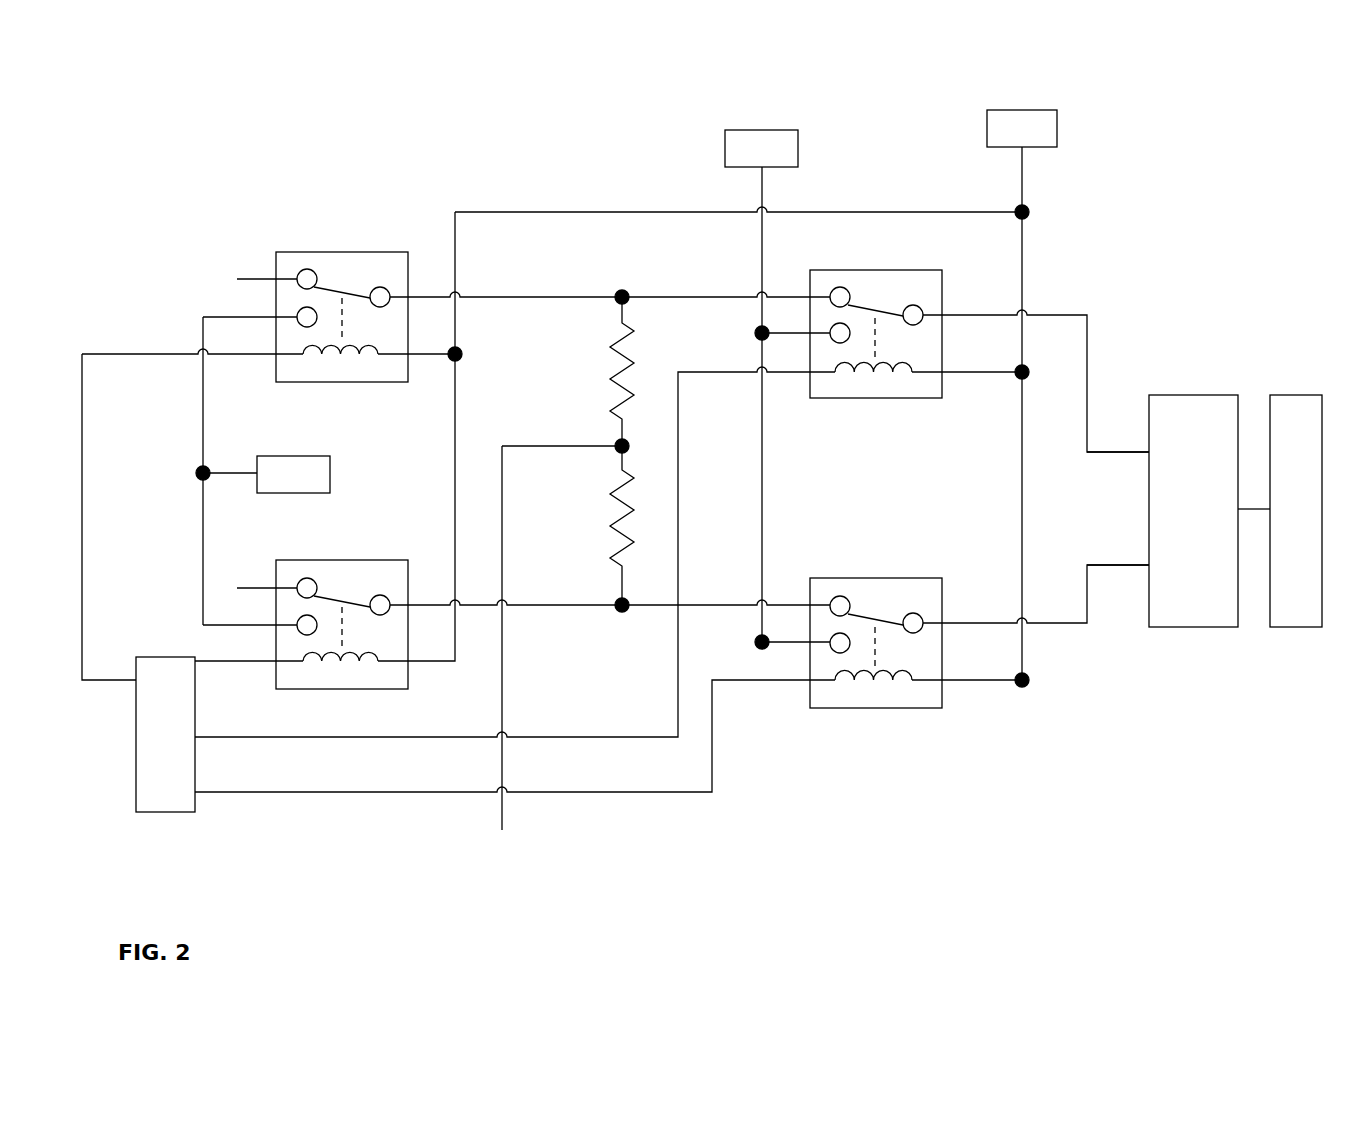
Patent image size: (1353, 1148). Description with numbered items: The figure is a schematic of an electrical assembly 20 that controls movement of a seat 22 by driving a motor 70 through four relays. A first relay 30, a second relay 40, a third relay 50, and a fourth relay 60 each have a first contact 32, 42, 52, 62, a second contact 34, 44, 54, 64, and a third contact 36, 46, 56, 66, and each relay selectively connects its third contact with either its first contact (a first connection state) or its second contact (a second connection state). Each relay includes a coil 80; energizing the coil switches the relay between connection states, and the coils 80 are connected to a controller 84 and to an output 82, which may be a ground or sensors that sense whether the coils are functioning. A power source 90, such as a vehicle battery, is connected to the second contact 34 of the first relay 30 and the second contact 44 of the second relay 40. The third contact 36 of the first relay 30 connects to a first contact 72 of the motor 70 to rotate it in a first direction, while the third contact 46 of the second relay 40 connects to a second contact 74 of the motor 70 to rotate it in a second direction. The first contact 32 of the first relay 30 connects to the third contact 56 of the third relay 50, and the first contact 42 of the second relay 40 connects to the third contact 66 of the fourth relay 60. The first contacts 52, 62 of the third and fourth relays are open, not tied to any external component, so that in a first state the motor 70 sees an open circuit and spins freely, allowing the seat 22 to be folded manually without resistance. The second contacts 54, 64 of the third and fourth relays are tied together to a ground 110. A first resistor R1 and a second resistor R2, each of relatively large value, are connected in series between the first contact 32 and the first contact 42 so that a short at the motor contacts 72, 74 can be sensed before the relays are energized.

The electrical assembly 20 is at (193, 92).
The seat 22 is at (1300, 395).
The first relay 30 is at (870, 268).
The first contact of the first relay 32 is at (840, 287).
The second contact of the first relay 34 is at (837, 343).
The third contact of the first relay 36 is at (912, 305).
The second relay 40 is at (870, 576).
The first contact of the second relay 42 is at (840, 596).
The second contact of the second relay 44 is at (837, 653).
The third contact of the second relay 46 is at (912, 613).
The third relay 50 is at (338, 248).
The first contact of the third relay 52 is at (306, 269).
The second contact of the third relay 54 is at (304, 328).
The third contact of the third relay 56 is at (378, 287).
The fourth relay 60 is at (338, 558).
The first contact of the fourth relay 62 is at (307, 578).
The second contact of the fourth relay 64 is at (304, 636).
The third contact of the fourth relay 66 is at (378, 595).
The motor 70 is at (1194, 386).
The first contact of the motor 72 is at (1149, 452).
The second contact of the motor 74 is at (1149, 565).
The coil 80 is at (349, 360).
The output 82 is at (1058, 130).
The controller 84 is at (163, 813).
The power source 90 is at (756, 122).
The ground 110 is at (331, 481).
The first resistor R1 is at (604, 397).
The second resistor R2 is at (604, 545).